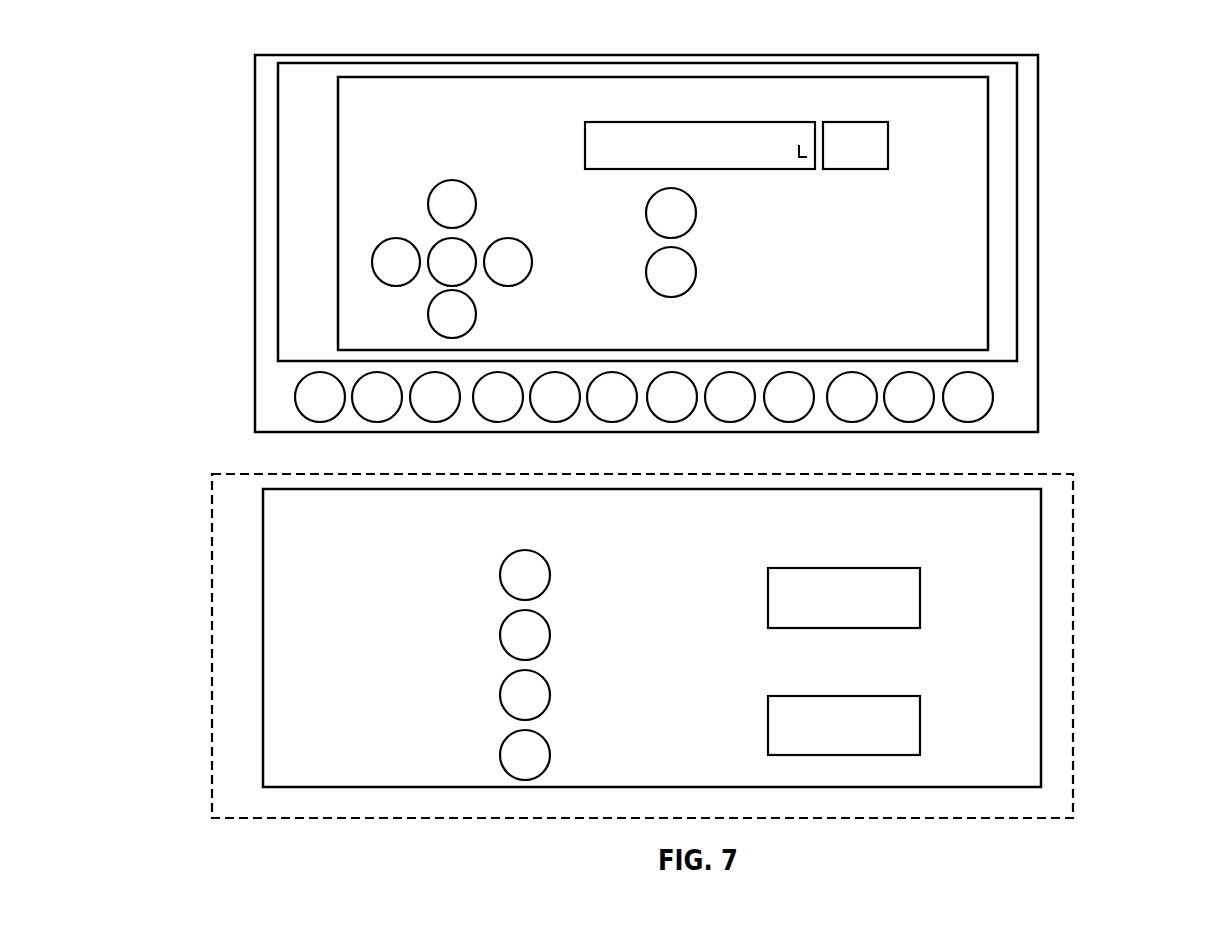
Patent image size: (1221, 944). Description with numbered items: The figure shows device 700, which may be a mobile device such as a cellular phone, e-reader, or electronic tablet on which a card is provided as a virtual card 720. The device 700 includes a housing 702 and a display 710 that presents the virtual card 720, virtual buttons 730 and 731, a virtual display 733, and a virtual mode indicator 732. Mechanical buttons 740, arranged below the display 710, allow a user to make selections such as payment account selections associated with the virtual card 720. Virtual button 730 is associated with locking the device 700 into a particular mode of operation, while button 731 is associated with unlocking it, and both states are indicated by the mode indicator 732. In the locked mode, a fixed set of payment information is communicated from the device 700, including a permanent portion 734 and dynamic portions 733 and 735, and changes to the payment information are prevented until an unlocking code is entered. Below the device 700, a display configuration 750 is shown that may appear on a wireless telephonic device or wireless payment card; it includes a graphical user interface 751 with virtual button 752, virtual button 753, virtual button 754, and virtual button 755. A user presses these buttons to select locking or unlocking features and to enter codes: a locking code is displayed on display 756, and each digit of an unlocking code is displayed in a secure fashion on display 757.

The device 700 is at (1180, 448).
The housing 702 is at (256, 171).
The display 710 is at (279, 104).
The virtual card 720 is at (339, 263).
The virtual button 730 is at (647, 215).
The virtual button 731 is at (647, 274).
The virtual mode indicator 732 is at (800, 160).
The virtual display 733 is at (589, 170).
The permanent portion 734 is at (437, 162).
The dynamic portion 735 is at (872, 170).
The mechanical buttons 740 is at (296, 398).
The display configuration 750 is at (212, 664).
The graphical user interface 751 is at (264, 521).
The virtual button 752 is at (500, 577).
The virtual button 753 is at (500, 637).
The virtual button 754 is at (500, 697).
The virtual button 755 is at (500, 757).
The display 756 is at (832, 568).
The display 757 is at (832, 696).